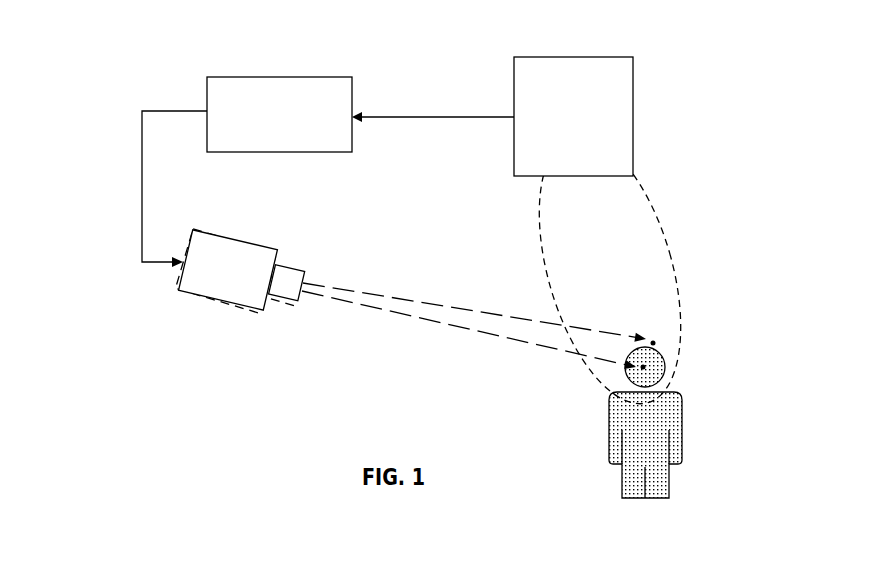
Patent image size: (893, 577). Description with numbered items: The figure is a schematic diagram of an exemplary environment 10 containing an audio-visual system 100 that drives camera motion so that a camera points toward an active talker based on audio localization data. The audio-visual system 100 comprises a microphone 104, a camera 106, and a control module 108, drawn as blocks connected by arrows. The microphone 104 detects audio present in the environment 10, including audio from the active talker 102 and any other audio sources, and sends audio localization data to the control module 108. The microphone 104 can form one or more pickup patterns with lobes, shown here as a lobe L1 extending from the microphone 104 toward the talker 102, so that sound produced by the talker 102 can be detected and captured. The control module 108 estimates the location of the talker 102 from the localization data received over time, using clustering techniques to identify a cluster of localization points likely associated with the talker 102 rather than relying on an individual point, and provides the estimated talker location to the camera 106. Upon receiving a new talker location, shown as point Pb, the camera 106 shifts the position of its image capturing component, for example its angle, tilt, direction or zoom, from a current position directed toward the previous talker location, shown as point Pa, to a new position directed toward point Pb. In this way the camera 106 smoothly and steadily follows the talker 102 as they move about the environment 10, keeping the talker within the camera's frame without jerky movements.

The environment 10 is at (704, 192).
The audio-visual system 100 is at (178, 48).
The talker 102 is at (682, 426).
The microphone 104 is at (633, 113).
The camera 106 is at (238, 305).
The control module 108 is at (277, 77).
The lobe L1 is at (675, 246).
The previous talker location Pa is at (664, 333).
The new talker location Pb is at (661, 365).